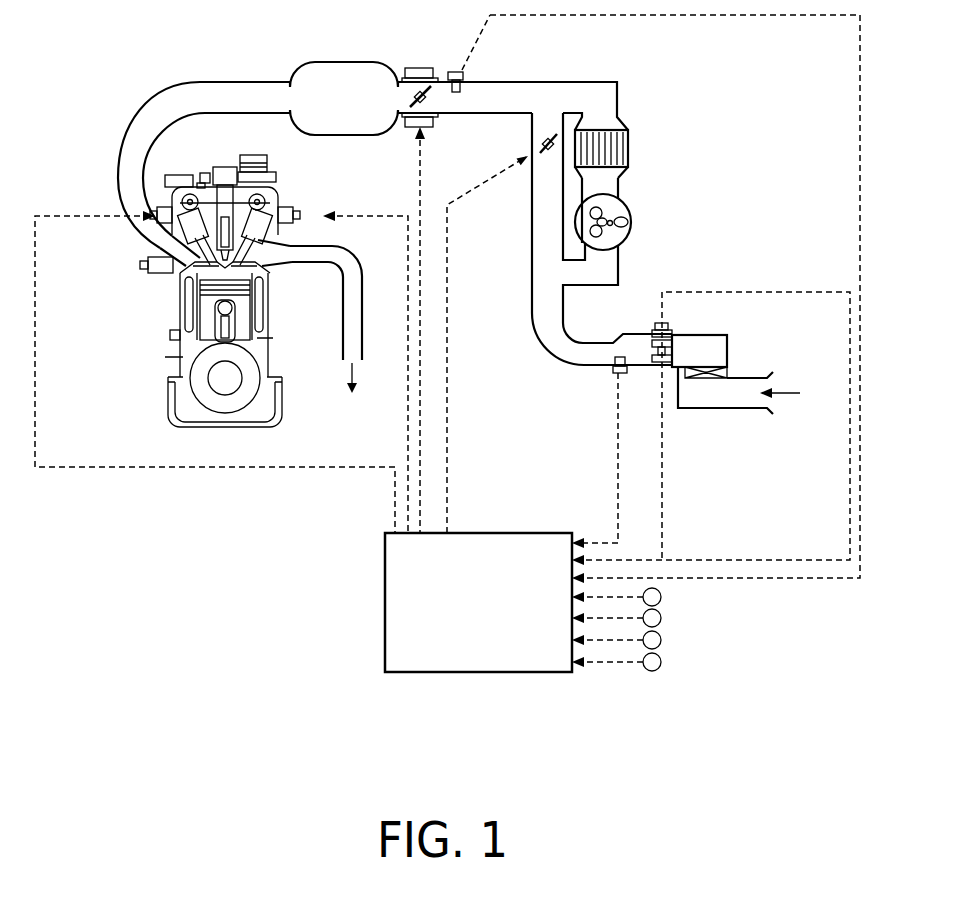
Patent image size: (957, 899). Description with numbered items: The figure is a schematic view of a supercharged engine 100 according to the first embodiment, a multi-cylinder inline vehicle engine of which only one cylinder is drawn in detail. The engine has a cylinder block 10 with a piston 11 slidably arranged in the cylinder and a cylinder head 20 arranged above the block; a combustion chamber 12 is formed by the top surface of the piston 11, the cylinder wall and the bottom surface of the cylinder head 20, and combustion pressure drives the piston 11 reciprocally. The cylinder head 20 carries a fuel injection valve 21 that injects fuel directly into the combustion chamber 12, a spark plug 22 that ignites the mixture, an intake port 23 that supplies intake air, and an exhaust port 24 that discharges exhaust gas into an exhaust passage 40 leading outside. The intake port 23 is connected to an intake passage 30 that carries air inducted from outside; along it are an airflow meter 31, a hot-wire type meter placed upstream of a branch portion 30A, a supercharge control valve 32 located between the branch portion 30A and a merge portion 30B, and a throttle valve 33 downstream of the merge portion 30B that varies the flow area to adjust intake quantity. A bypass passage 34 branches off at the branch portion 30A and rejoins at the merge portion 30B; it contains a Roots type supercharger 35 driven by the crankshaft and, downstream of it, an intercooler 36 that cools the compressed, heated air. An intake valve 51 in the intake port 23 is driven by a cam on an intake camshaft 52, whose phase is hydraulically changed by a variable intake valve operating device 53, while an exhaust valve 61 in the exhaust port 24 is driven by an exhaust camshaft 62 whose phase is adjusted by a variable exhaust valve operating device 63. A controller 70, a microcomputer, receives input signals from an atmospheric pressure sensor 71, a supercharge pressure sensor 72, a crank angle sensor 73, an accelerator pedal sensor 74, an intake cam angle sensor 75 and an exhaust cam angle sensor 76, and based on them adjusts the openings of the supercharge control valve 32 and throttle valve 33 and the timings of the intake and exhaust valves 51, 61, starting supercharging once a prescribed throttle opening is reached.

The cylinder block 10 is at (270, 319).
The piston 11 is at (203, 310).
The combustion chamber 12 is at (203, 283).
The cylinder head 20 is at (318, 246).
The fuel injection valve 21 is at (140, 265).
The spark plug 22 is at (220, 196).
The intake port 23 is at (172, 258).
The exhaust port 24 is at (275, 254).
The intake passage 30 is at (518, 221).
The branch portion 30A is at (548, 270).
The merge portion 30B is at (547, 100).
The airflow meter 31 is at (668, 322).
The supercharge control valve 32 is at (538, 142).
The throttle valve 33 is at (430, 99).
The bypass passage 34 is at (620, 265).
The supercharger 35 is at (632, 222).
The intercooler 36 is at (629, 152).
The exhaust passage 40 is at (343, 340).
The intake valve 51 is at (190, 246).
The intake camshaft 52 is at (180, 199).
The variable intake valve operating device 53 is at (158, 213).
The exhaust valve 61 is at (245, 244).
The exhaust camshaft 62 is at (266, 199).
The variable exhaust valve operating device 63 is at (294, 210).
The controller 70 is at (496, 672).
The atmospheric pressure sensor 71 is at (613, 372).
The supercharge pressure sensor 72 is at (450, 72).
The crank angle sensor 73 is at (661, 597).
The accelerator pedal sensor 74 is at (661, 618).
The intake cam angle sensor 75 is at (661, 640).
The exhaust cam angle sensor 76 is at (661, 662).
The supercharged engine 100 is at (293, 167).